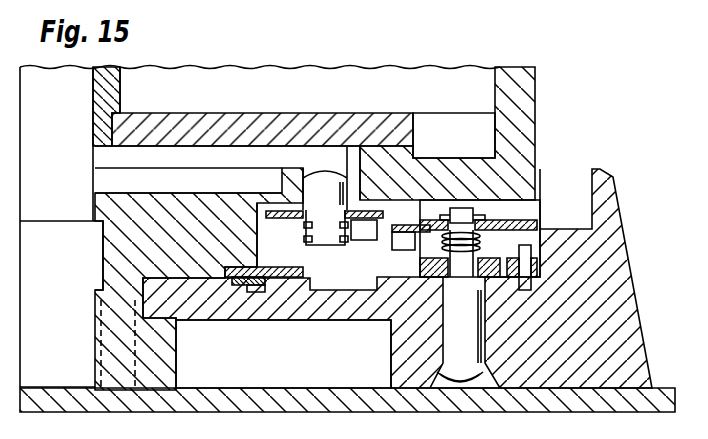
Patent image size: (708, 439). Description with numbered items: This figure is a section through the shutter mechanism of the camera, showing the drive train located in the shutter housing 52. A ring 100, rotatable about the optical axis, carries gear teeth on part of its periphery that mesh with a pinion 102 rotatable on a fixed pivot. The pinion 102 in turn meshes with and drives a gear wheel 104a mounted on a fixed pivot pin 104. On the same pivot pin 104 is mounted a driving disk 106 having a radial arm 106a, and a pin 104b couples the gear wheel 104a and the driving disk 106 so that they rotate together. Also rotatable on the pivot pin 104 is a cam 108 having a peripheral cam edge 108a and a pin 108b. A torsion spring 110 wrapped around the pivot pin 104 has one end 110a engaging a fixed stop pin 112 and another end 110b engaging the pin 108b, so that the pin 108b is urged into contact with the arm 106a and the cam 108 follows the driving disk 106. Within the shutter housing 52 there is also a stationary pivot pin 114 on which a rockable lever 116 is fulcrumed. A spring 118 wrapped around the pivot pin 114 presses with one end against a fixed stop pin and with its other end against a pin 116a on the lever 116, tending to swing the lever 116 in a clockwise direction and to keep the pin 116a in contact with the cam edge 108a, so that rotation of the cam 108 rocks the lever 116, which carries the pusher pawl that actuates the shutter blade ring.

The shutter housing 52 is at (527, 100).
The ring 100 is at (337, 272).
The pinion 102 is at (320, 300).
The fixed pivot pin 104 is at (446, 337).
The gear wheel 104a is at (343, 320).
The pin 104b is at (484, 312).
The driving disk 106 is at (443, 270).
The radial arm 106a is at (356, 300).
The cam 108 is at (512, 218).
The peripheral cam edge 108a is at (400, 222).
The pin 108b is at (392, 244).
The torsion spring 110 is at (461, 255).
The end of torsion spring 110a is at (510, 250).
The end of torsion spring 110b is at (412, 214).
The fixed stop pin 112 is at (554, 210).
The stationary pivot pin 114 is at (313, 190).
The rockable lever 116 is at (282, 184).
The pin 116a is at (368, 228).
The spring 118 is at (305, 230).